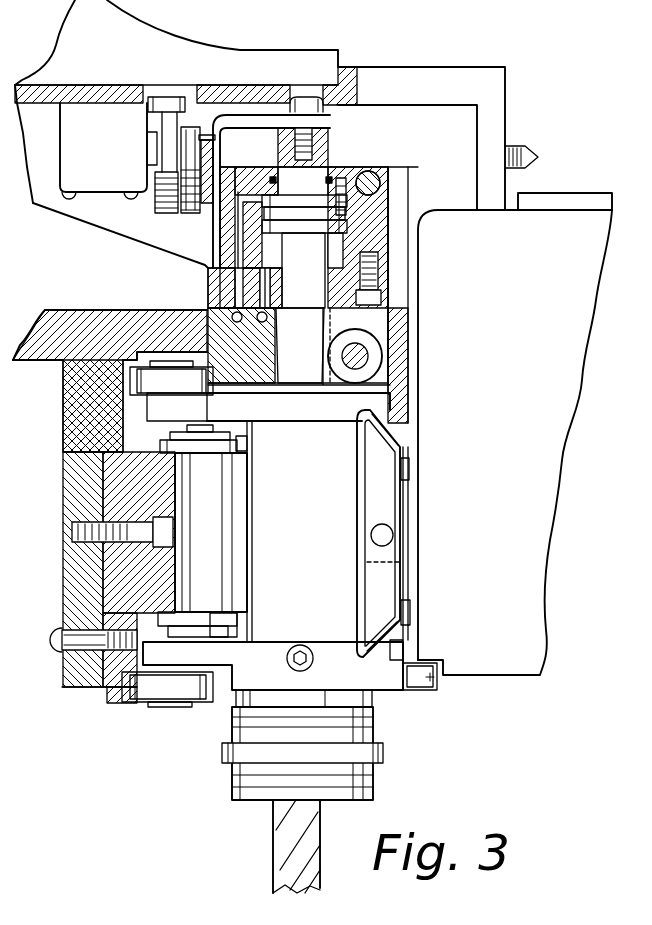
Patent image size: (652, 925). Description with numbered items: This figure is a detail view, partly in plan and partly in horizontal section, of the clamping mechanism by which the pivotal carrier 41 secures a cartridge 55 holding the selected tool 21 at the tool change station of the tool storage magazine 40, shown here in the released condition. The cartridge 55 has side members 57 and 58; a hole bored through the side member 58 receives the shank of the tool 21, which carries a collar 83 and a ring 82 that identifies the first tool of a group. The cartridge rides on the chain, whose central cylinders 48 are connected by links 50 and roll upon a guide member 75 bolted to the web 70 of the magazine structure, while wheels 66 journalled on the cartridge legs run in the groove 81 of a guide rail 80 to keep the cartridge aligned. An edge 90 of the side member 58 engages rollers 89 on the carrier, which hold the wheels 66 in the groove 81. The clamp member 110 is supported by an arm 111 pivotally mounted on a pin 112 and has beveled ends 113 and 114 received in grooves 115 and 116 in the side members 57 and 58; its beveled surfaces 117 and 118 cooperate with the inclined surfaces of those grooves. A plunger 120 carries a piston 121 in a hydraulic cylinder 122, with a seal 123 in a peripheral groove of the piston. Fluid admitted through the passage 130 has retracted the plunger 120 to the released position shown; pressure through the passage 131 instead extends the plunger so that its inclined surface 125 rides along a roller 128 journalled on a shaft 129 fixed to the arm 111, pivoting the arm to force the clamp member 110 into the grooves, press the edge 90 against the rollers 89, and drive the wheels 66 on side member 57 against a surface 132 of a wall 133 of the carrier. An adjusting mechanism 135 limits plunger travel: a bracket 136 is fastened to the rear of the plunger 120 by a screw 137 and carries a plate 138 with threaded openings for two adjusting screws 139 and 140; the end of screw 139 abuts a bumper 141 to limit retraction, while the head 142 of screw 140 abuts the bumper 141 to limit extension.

The tool 21 is at (263, 827).
The tool storage magazine 40 is at (106, 716).
The pivotal carrier 41 is at (155, 255).
The central cylinder 48 is at (210, 513).
The link 50 is at (236, 463).
The cartridge 55 is at (385, 707).
The side member 57 is at (260, 413).
The side member 58 is at (263, 650).
The wheel 66 is at (133, 378).
The web 70 is at (83, 428).
The guide member 75 is at (120, 482).
The guide rail 80 is at (103, 655).
The groove 81 is at (143, 680).
The ring 82 is at (222, 752).
The collar 83 is at (233, 770).
The roller 89 is at (438, 680).
The edge 90 is at (405, 642).
The clamp member 110 is at (383, 500).
The arm 111 is at (407, 335).
The pin 112 is at (372, 171).
The beveled end 113 is at (368, 433).
The beveled end 114 is at (368, 637).
The groove 115 is at (365, 410).
The groove 116 is at (370, 662).
The beveled surface 117 is at (400, 437).
The beveled surface 118 is at (408, 628).
The plunger 120 is at (303, 270).
The piston 121 is at (292, 198).
The hydraulic cylinder 122 is at (267, 247).
The seal 123 is at (342, 217).
The inclined surface 125 is at (335, 325).
The roller 128 is at (365, 330).
The shaft 129 is at (368, 358).
The passage 130 is at (267, 285).
The passage 131 is at (212, 293).
The surface 132 is at (208, 396).
The wall 133 is at (253, 363).
The adjusting mechanism 135 is at (82, 135).
The bracket 136 is at (247, 116).
The screw 137 is at (306, 98).
The plate 138 is at (148, 177).
The adjusting screw 139 is at (192, 208).
The adjusting screw 140 is at (157, 202).
The bumper 141 is at (200, 128).
The head 142 is at (166, 97).